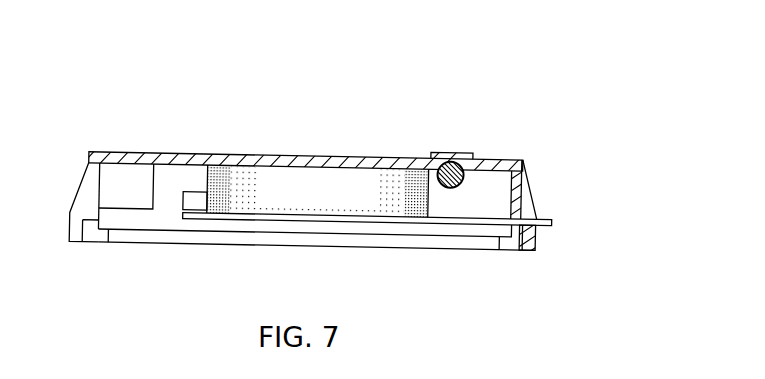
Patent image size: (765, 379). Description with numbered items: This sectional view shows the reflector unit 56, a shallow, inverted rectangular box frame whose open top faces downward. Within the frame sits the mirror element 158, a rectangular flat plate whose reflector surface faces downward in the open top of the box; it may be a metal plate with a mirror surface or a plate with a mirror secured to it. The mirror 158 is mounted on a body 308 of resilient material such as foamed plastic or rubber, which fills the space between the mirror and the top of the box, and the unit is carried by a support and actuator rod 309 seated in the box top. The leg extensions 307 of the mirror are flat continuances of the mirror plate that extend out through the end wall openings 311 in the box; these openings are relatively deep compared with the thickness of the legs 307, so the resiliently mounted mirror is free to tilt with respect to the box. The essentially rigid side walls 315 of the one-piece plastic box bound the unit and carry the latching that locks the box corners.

The reflector unit 56 is at (172, 146).
The mirror element 158 is at (465, 232).
The leg extensions 307 is at (203, 220).
The body of resilient material 308 is at (274, 176).
The support and actuator rod 309 is at (458, 152).
The end wall openings 311 is at (186, 207).
The side walls 315 is at (530, 187).